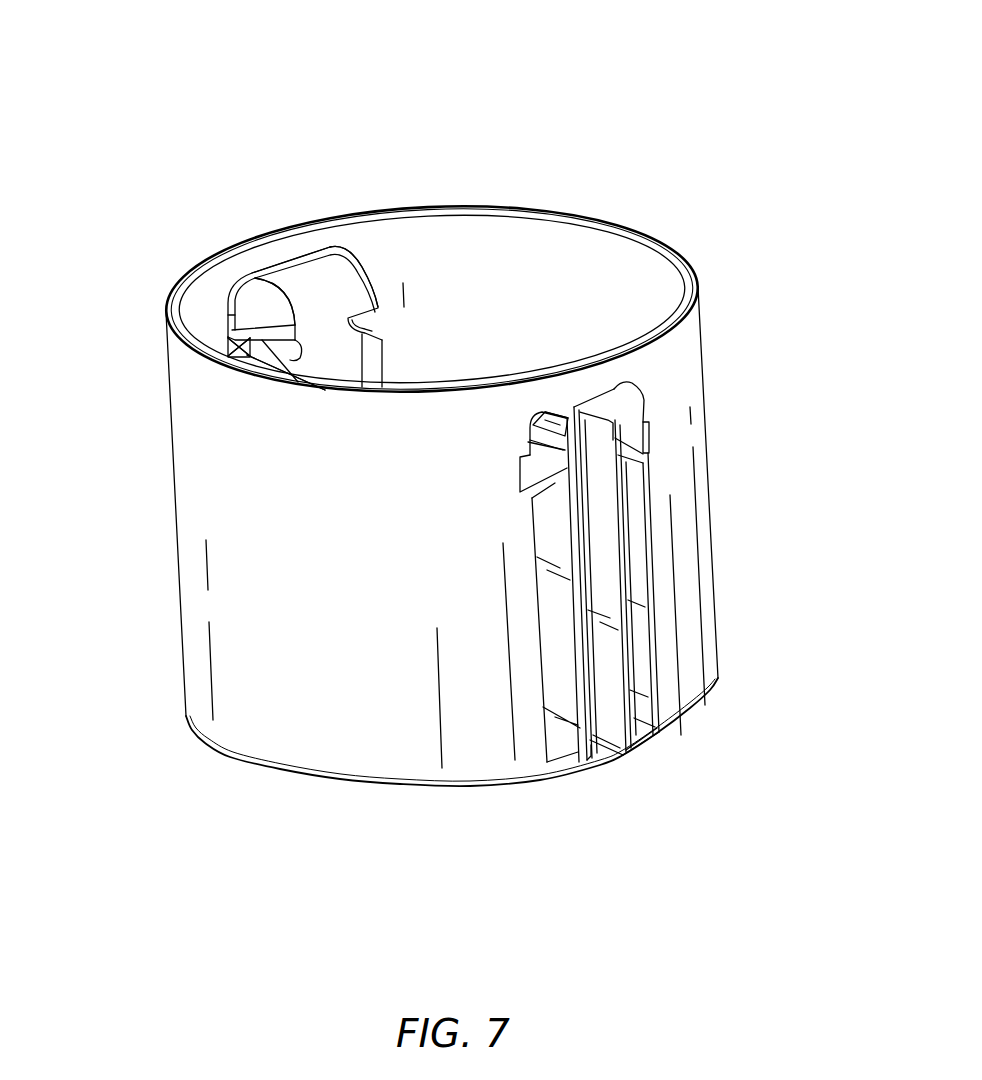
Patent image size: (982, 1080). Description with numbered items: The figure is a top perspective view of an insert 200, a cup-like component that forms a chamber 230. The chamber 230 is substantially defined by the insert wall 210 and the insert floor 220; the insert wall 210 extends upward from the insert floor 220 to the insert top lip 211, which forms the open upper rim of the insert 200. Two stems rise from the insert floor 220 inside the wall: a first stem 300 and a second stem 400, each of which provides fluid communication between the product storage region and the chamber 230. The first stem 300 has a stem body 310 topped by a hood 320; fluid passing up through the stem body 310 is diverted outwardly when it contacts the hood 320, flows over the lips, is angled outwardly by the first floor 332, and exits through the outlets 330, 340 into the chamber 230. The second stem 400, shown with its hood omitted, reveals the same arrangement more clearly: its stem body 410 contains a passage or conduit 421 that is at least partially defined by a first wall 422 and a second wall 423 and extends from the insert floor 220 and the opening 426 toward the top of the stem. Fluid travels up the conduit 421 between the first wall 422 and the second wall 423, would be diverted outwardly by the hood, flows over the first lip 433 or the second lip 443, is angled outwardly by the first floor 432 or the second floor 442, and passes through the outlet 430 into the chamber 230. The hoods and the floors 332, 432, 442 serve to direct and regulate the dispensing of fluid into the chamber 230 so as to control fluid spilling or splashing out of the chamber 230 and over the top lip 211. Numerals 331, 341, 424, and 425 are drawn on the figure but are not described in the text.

The insert 200 is at (124, 115).
The insert wall 210 is at (604, 246).
The insert top lip 211 is at (520, 207).
The insert floor 220 is at (300, 778).
The chamber 230 is at (492, 225).
The first stem 300 is at (305, 282).
The hood 320 is at (305, 280).
The stem body 310 is at (355, 377).
The first outlet 330 is at (285, 367).
The curved surface 331 is at (262, 301).
The first floor 332 is at (248, 358).
The second outlet 340 is at (400, 315).
The rounded edge 341 is at (367, 285).
The second stem 400 is at (611, 602).
The stem body 410 is at (557, 404).
The passage or conduit 421 is at (604, 720).
The first wall 422 is at (603, 587).
The second wall 423 is at (558, 683).
The right rail wall 424 is at (654, 700).
The left rail bottom 425 is at (553, 742).
The opening 426 is at (575, 775).
The first outlet 430 is at (613, 388).
The first floor 432 is at (630, 455).
The first lip 433 is at (615, 440).
The second floor 442 is at (522, 488).
The second lip 443 is at (528, 473).